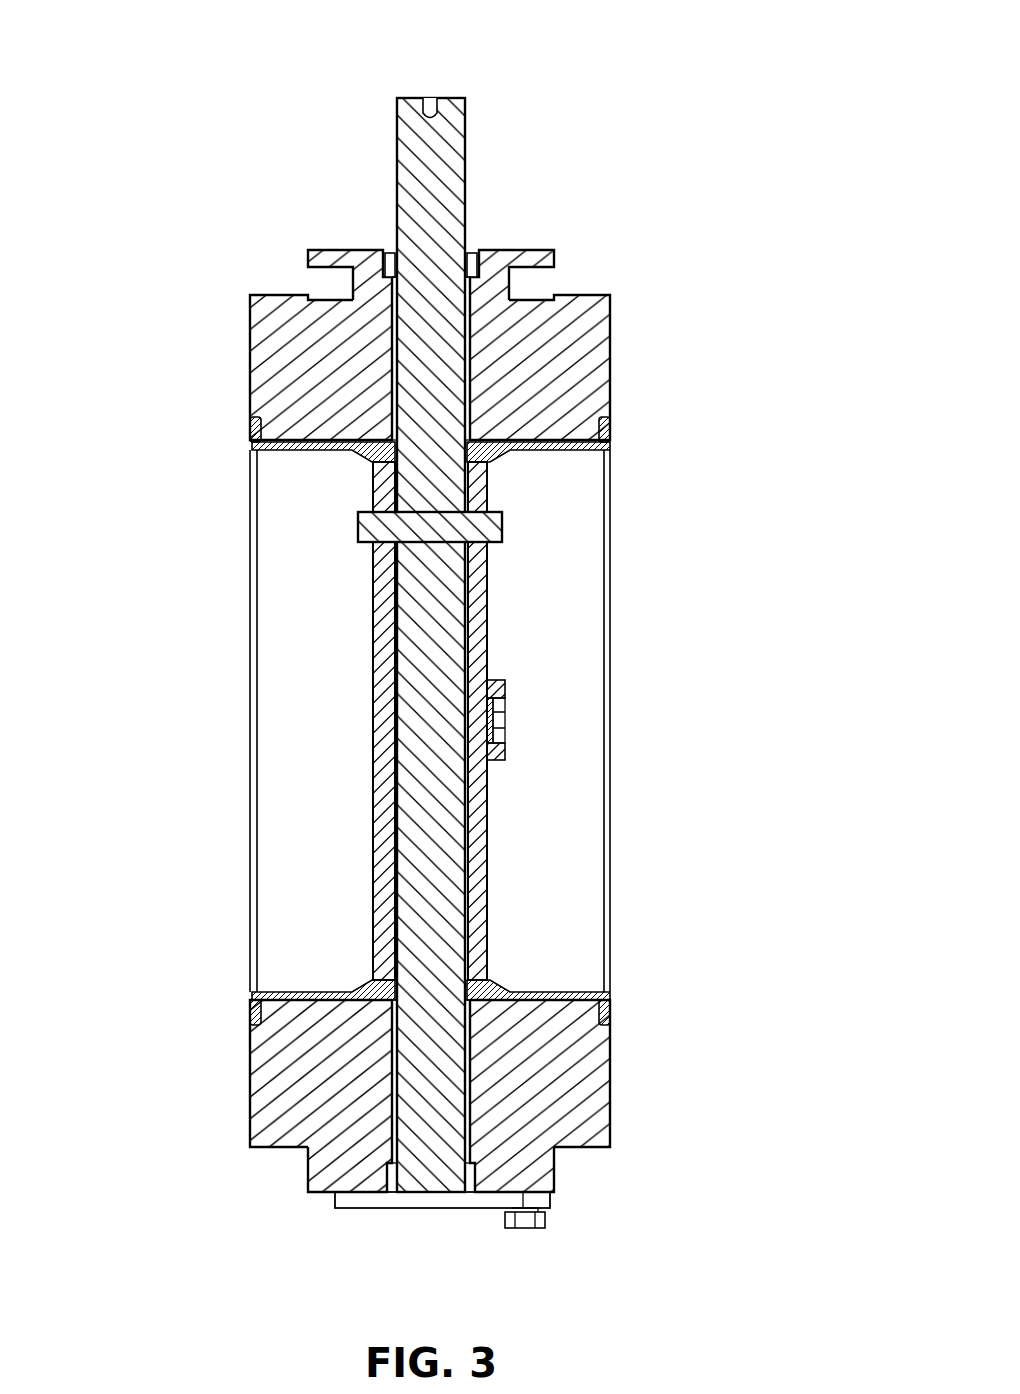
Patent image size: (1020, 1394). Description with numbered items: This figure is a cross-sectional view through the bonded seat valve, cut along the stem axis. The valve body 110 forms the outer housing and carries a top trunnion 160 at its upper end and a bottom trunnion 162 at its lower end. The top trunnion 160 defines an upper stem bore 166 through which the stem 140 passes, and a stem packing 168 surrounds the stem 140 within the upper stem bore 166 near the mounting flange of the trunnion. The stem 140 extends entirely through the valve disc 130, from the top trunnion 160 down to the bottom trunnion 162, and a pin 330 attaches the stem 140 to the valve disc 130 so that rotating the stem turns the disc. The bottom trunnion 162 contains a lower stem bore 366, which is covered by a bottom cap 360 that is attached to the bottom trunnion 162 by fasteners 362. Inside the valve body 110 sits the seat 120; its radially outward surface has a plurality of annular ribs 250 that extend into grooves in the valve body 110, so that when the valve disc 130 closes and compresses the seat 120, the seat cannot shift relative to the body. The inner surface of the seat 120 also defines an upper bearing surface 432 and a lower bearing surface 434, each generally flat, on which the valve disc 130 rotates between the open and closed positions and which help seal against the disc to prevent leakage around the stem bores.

The valve body 110 is at (612, 348).
The seat 120 is at (578, 518).
The valve disc 130 is at (488, 607).
The stem 140 is at (468, 98).
The top trunnion 160 is at (367, 248).
The bottom trunnion 162 is at (557, 1166).
The upper stem bore 166 is at (394, 344).
The stem packing 168 is at (470, 251).
The annular ribs 250 is at (380, 436).
The pin 330 is at (502, 538).
The bottom cap 360 is at (390, 1208).
The fasteners 362 is at (527, 1230).
The lower stem bore 366 is at (467, 1067).
The upper bearing surface 432 is at (362, 463).
The lower bearing surface 434 is at (365, 985).